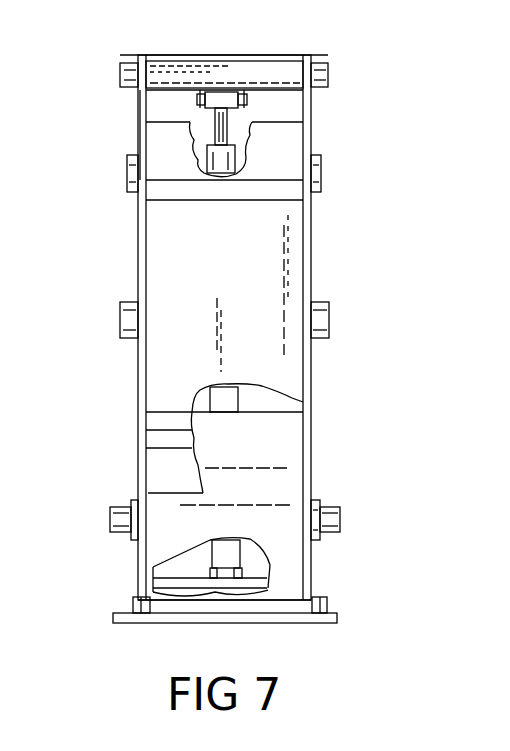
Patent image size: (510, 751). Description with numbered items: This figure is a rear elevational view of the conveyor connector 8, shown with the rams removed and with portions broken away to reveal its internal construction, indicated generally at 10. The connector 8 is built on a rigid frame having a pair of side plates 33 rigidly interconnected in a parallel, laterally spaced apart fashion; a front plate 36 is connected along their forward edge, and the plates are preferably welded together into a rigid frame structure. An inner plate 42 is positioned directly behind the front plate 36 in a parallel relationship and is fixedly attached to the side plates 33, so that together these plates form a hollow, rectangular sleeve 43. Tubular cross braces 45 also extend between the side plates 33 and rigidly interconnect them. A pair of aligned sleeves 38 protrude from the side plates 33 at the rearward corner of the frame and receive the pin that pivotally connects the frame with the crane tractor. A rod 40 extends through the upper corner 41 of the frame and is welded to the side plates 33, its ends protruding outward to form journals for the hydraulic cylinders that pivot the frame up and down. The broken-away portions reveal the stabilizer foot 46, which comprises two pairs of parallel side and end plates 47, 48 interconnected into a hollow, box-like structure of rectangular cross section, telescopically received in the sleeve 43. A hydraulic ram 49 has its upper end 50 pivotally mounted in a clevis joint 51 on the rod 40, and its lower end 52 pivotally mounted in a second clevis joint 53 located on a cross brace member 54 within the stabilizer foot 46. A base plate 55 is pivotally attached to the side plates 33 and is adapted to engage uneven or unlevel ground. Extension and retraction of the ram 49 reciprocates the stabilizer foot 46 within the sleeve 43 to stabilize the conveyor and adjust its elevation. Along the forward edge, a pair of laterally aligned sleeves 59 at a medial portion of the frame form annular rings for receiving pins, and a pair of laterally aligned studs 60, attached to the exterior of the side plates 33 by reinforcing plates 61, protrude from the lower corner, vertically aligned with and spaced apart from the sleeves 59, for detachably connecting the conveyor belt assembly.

The connector 8 is at (256, 53).
The housing assembly 10 is at (283, 448).
The side plates 33 is at (142, 260).
The front plate 36 is at (152, 107).
The sleeves 38 is at (130, 162).
The rod 40 is at (283, 72).
The upper corner 41 is at (137, 62).
The inner plate 42 is at (293, 137).
The sleeve 43 is at (272, 402).
The cross braces 45 is at (157, 197).
The stabilizer foot 46 is at (312, 578).
The side plates 47 is at (285, 487).
The end plates 48 is at (150, 557).
The ram 49 is at (233, 153).
The upper end 50 is at (228, 102).
The clevis joint 51 is at (202, 93).
The lower end 52 is at (228, 570).
The second clevis joint 53 is at (243, 570).
The cross brace member 54 is at (180, 580).
The base plate 55 is at (292, 618).
The sleeves 59 is at (122, 308).
The studs 60 is at (122, 520).
The reinforcing plates 61 is at (320, 540).